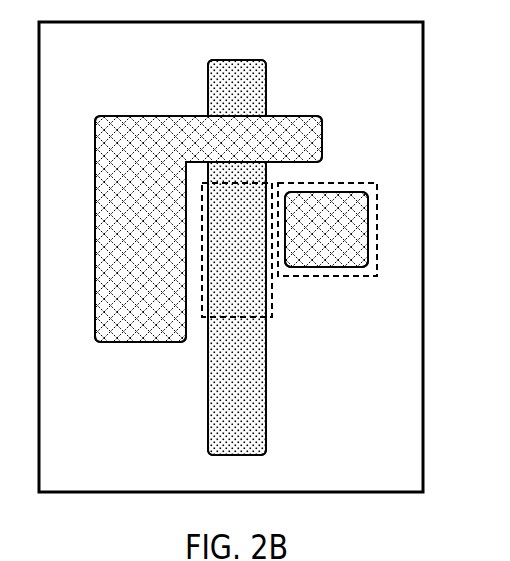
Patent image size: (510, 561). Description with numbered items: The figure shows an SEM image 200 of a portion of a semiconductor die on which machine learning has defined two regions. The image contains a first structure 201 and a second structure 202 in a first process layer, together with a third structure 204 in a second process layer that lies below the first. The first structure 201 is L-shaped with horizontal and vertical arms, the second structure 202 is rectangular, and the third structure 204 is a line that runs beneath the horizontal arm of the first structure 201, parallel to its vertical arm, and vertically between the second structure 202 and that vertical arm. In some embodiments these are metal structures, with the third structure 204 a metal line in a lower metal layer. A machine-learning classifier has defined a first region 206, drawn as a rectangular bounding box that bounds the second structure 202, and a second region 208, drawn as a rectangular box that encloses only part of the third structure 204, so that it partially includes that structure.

The SEM image 200 is at (387, 52).
The first structure 201 is at (125, 238).
The second structure 202 is at (310, 238).
The third structure 204 is at (222, 394).
The first region 206 is at (343, 184).
The second region 208 is at (272, 311).